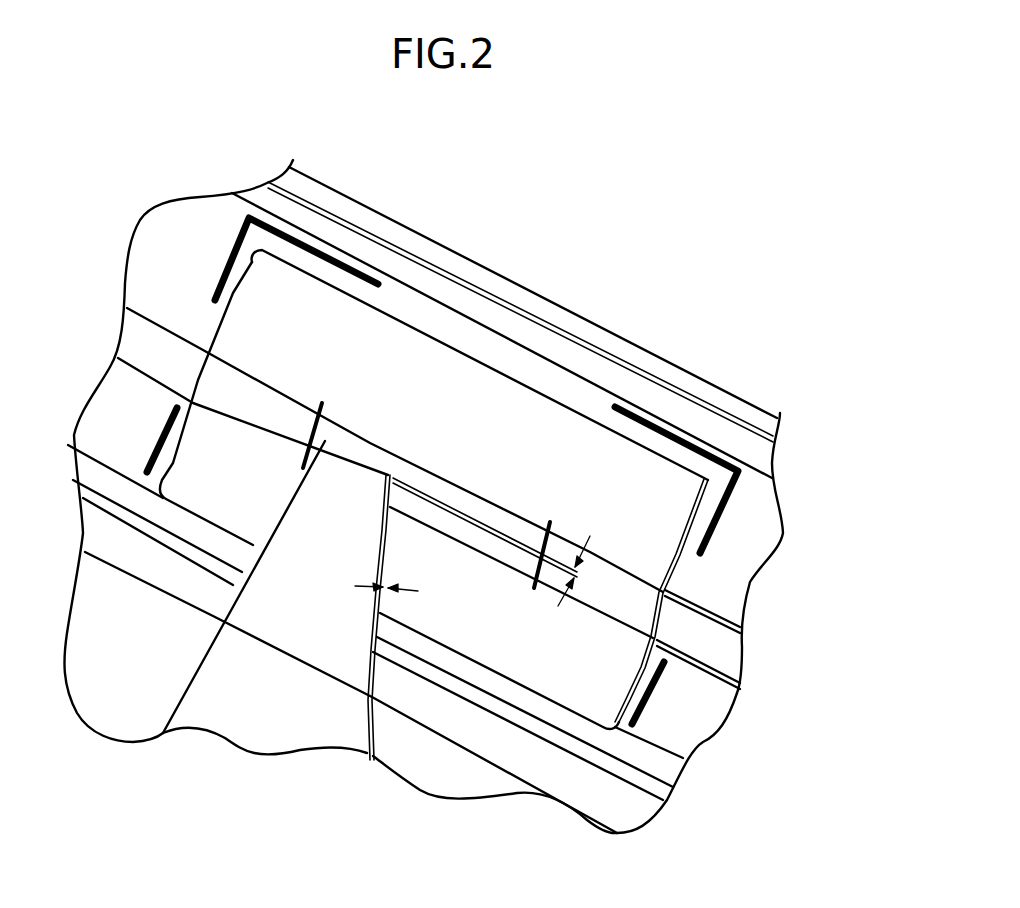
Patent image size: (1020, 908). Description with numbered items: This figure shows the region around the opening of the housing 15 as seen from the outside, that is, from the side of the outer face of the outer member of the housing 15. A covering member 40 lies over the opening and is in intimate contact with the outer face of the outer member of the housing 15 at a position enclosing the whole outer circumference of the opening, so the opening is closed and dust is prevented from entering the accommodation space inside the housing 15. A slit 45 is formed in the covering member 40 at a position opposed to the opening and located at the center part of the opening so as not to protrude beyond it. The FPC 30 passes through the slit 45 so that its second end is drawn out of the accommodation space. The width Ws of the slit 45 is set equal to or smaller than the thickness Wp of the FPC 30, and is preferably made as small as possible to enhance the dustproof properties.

The housing 15 is at (742, 553).
The covering member 40 is at (545, 425).
The slit 45 is at (450, 513).
The FPC 30 is at (260, 738).